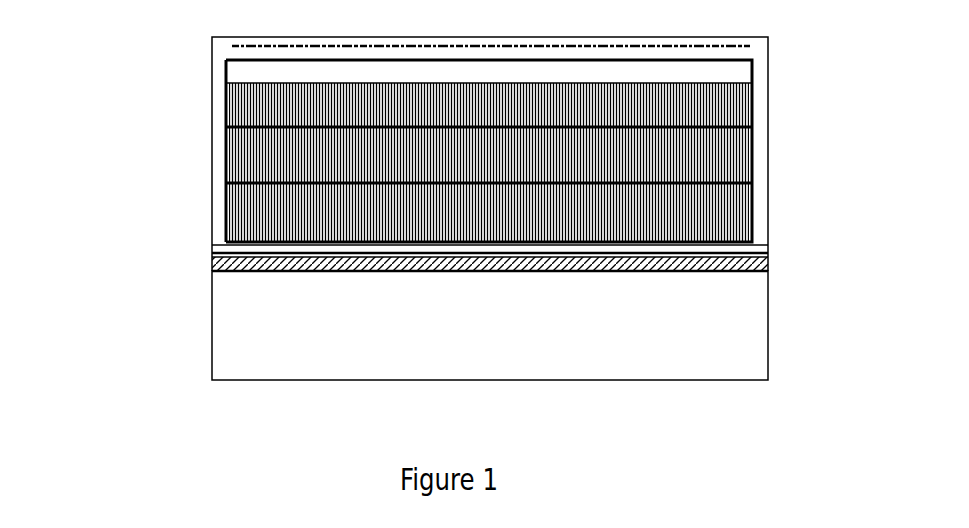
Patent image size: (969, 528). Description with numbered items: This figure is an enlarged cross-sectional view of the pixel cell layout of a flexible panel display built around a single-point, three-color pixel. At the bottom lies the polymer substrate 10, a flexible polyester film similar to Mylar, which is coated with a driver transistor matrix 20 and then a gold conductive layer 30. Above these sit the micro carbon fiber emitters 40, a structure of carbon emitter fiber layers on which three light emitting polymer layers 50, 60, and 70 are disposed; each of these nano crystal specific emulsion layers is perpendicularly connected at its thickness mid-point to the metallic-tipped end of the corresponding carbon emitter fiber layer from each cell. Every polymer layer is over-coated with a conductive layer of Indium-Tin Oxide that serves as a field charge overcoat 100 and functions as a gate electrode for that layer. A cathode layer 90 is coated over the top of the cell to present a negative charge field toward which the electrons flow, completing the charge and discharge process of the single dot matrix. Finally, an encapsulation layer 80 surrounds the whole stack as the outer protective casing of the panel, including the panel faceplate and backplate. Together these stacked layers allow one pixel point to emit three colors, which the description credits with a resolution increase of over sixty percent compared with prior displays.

The polymer substrate 10 is at (733, 322).
The driver transistor matrix 20 is at (768, 263).
The gold conductive layer 30 is at (768, 251).
The micro carbon fiber emitters 40 is at (275, 215).
The light emitting polymer layer 50 is at (748, 213).
The light emitting polymer layer 60 is at (748, 162).
The light emitting polymer layer 70 is at (748, 102).
The encapsulation layer 80 is at (218, 158).
The cathode layer 90 is at (232, 46).
The field charge overcoat 100 is at (226, 72).